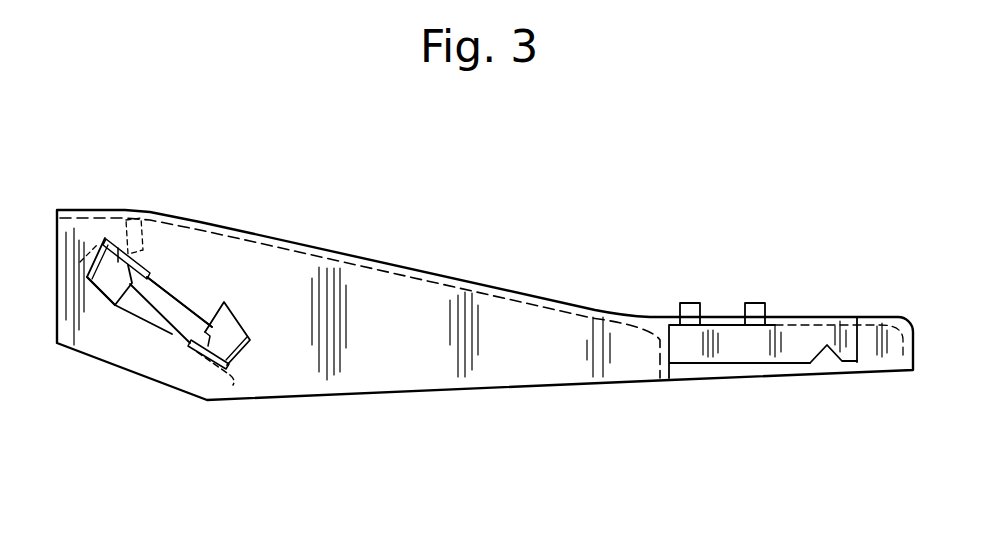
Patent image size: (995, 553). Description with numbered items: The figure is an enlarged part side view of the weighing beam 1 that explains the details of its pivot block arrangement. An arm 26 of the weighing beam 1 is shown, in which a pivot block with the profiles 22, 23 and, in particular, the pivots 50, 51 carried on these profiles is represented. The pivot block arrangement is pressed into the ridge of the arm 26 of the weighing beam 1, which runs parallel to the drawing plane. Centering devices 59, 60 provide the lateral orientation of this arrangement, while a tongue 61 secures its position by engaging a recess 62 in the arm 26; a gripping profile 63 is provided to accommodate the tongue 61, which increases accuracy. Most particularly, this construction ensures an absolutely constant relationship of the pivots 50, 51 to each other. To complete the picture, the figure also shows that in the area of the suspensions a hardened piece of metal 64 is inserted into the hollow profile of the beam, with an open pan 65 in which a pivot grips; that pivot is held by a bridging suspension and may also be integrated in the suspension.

The weighing beam 1 is at (446, 360).
The profile 22 is at (117, 262).
The profile 23 is at (246, 352).
The arm 26 is at (173, 317).
The pivot 50 is at (225, 300).
The pivot 51 is at (112, 308).
The centering device 59 is at (103, 238).
The centering device 60 is at (236, 378).
The tongue 61 is at (142, 270).
The recess 62 is at (197, 302).
The gripping profile 63 is at (131, 250).
The hardened piece of metal 64 is at (733, 345).
The open pan 65 is at (822, 356).